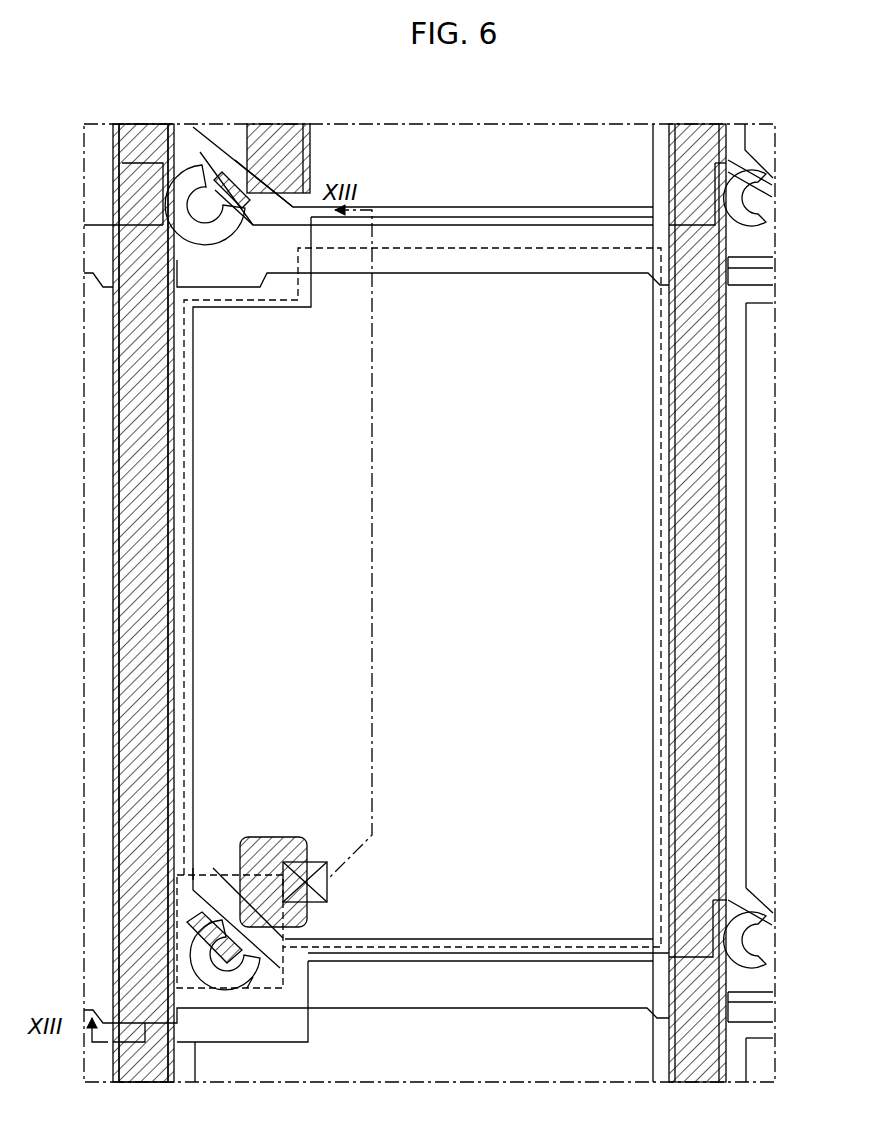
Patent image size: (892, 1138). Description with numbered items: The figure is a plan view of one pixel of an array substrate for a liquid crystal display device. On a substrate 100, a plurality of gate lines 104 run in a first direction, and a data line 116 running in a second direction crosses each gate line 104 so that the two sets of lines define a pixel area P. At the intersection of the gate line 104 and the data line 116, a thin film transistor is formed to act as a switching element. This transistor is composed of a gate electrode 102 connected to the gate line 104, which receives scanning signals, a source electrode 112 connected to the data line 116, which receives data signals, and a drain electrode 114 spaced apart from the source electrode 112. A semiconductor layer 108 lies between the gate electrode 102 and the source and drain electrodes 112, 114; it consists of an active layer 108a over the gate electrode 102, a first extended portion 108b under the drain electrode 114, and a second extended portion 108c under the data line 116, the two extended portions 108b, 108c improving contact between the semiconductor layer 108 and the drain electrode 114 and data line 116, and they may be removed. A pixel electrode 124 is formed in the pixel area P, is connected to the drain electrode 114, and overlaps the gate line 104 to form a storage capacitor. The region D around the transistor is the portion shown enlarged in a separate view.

The substrate 100 is at (776, 820).
The gate electrode 102 is at (197, 873).
The gate line 104 is at (500, 262).
The semiconductor layer 108 is at (278, 740).
The active layer 108a is at (225, 862).
The first extended portion 108b is at (262, 838).
The second extended portion 108c is at (170, 733).
The source electrode 112 is at (253, 977).
The drain electrode 114 is at (290, 837).
The data line 116 is at (113, 845).
The pixel electrode 124 is at (653, 738).
The pixel area P is at (665, 615).
The region D is at (285, 980).